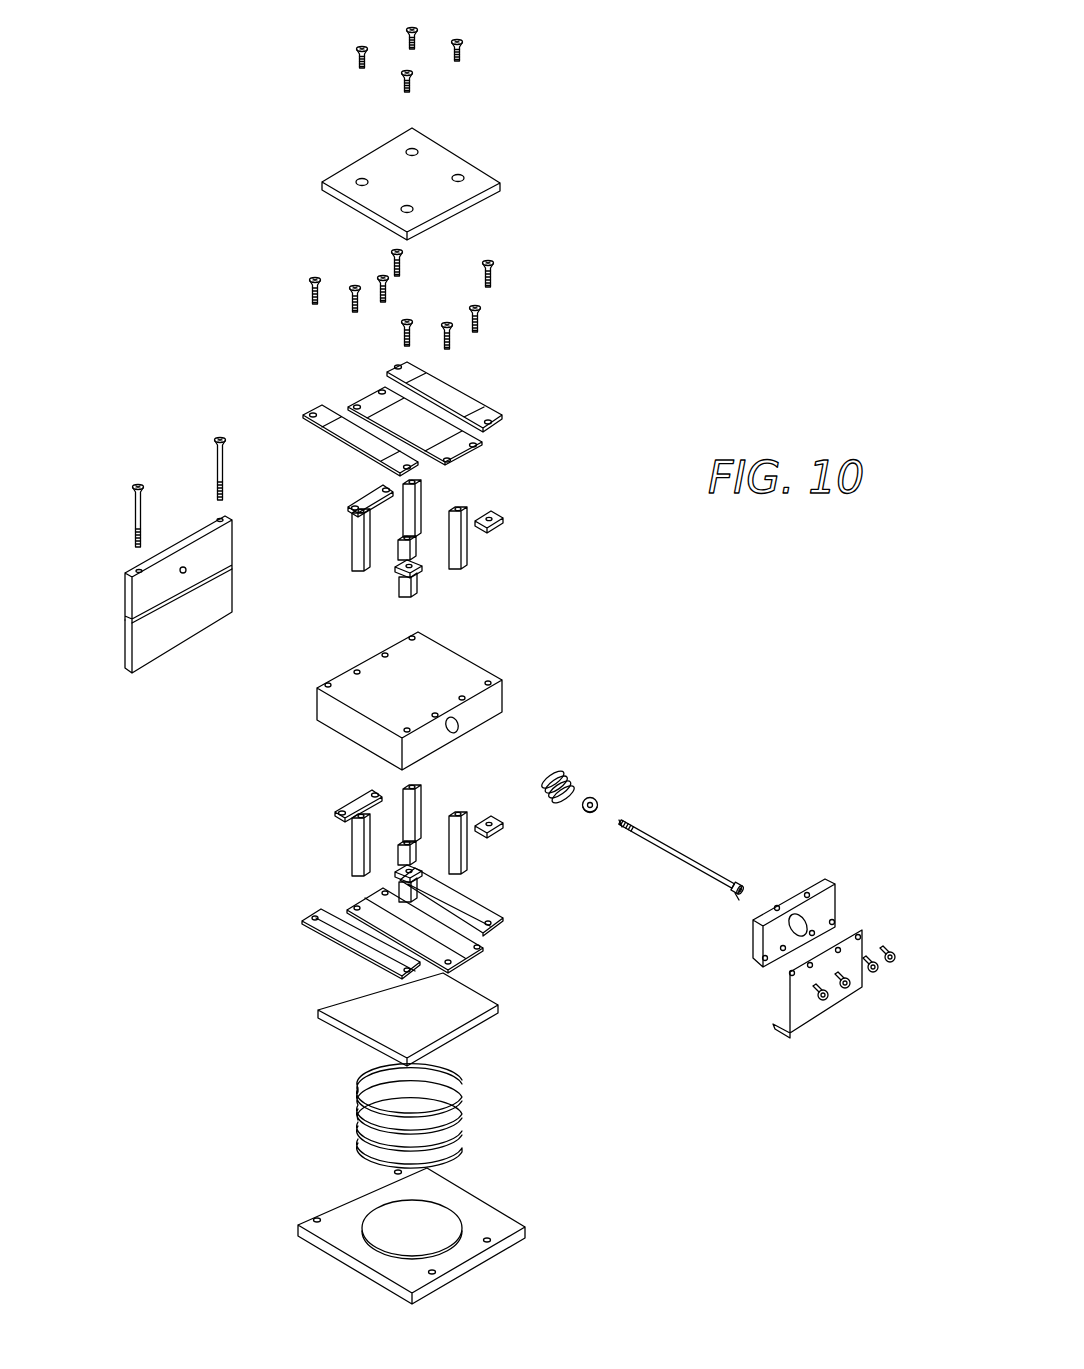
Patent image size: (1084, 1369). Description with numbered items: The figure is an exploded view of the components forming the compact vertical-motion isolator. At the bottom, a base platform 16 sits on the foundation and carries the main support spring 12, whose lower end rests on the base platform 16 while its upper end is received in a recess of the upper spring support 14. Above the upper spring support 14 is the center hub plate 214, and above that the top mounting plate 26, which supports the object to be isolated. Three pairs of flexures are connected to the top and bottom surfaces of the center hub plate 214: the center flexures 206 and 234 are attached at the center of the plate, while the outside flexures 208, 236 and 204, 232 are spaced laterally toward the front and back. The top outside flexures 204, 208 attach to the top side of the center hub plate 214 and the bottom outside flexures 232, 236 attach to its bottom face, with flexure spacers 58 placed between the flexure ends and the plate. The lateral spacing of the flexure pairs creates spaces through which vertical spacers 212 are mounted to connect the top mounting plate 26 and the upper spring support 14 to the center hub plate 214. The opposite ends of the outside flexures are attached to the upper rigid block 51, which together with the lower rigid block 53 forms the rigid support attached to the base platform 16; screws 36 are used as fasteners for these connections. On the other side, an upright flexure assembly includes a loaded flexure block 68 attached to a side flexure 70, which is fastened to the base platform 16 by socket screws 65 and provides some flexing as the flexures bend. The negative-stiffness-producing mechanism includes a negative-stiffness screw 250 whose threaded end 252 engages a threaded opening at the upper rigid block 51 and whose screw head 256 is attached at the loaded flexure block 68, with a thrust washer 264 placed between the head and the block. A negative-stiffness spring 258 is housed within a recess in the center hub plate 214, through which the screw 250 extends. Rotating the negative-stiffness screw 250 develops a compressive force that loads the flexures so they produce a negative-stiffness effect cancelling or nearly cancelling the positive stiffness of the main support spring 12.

The screws 36 is at (462, 53).
The top mounting plate 26 is at (458, 163).
The outside flexure 204 is at (447, 395).
The center flexure 206 is at (398, 423).
The outside flexure 208 is at (360, 440).
The vertical spacers 212 is at (422, 492).
The spacer 58 is at (352, 503).
The upper rigid block 51 is at (125, 593).
The lower rigid block 53 is at (130, 647).
The center hub plate 214 is at (338, 720).
The outside flexure 232 is at (458, 903).
The center flexure 234 is at (460, 948).
The outside flexure 236 is at (357, 940).
The negative-stiffness spring 258 is at (570, 782).
The thrust washer 264 is at (597, 802).
The negative-stiffness screw 250 is at (692, 857).
The threaded end 252 is at (625, 828).
The screw head 256 is at (737, 897).
The loaded flexure block 68 is at (823, 903).
The socket screws 65 is at (850, 987).
The side flexure 70 is at (800, 1013).
The upper spring support 14 is at (343, 1025).
The main support spring 12 is at (455, 1120).
The base platform 16 is at (490, 1222).